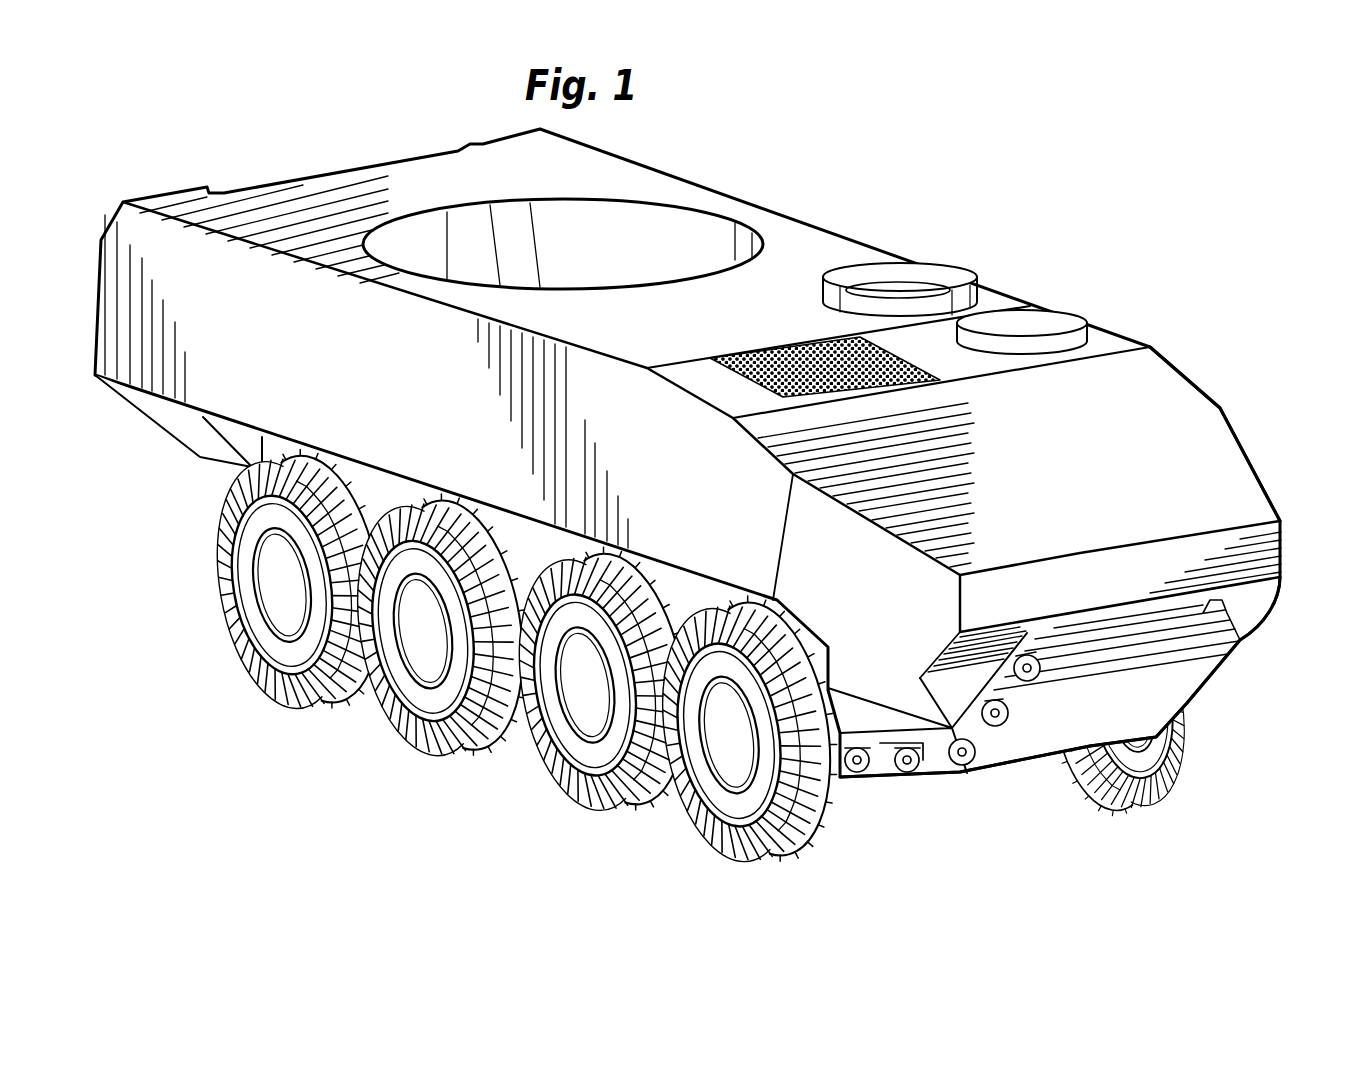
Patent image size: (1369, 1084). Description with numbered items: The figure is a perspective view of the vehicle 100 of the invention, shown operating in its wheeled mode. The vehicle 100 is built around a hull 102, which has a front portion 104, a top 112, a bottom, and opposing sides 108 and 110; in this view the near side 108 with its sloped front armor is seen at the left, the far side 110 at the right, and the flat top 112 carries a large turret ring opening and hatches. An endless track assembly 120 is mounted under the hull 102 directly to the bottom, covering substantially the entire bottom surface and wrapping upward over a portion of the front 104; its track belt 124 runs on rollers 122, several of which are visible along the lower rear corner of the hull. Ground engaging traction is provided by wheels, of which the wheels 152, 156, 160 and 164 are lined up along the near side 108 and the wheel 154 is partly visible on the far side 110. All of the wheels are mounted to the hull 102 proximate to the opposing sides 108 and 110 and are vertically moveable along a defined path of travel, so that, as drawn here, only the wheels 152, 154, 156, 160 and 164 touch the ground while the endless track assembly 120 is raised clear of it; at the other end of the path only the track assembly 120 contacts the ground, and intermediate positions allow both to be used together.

The vehicle 100 is at (993, 206).
The hull 102 is at (1013, 287).
The front portion 104 is at (1259, 603).
The side 108 is at (233, 375).
The side 110 is at (1183, 426).
The top 112 is at (810, 243).
The endless track assembly 120 is at (1009, 632).
The rollers 122 is at (1003, 767).
The track belt 124 is at (1156, 695).
The wheel 152 is at (760, 862).
The wheel 154 is at (1169, 777).
The wheel 156 is at (607, 810).
The wheel 160 is at (437, 753).
The wheel 164 is at (307, 710).